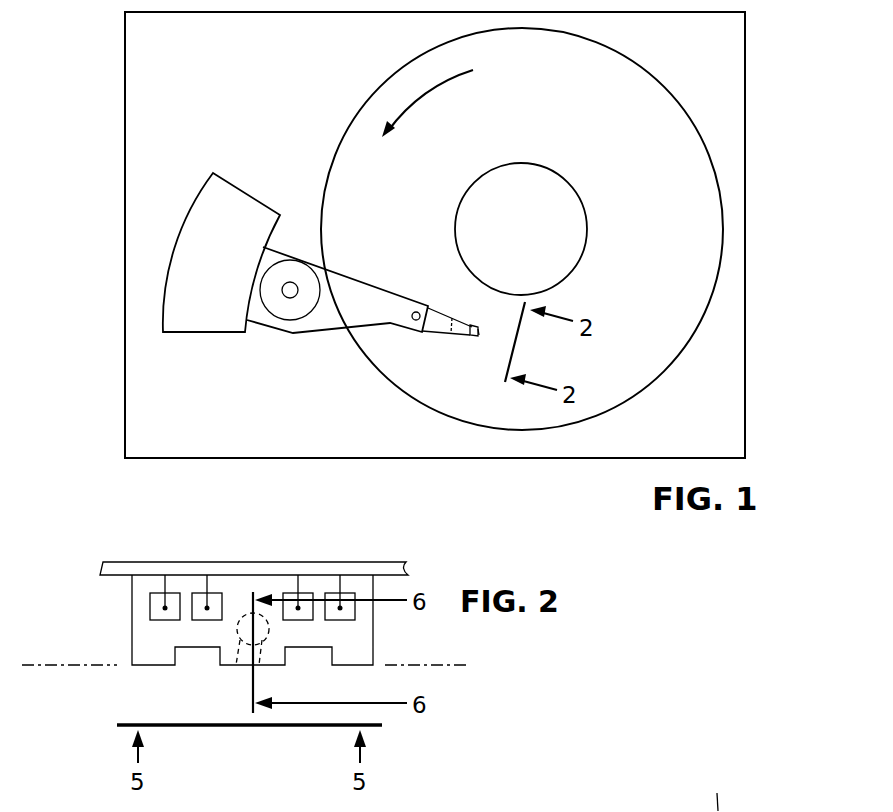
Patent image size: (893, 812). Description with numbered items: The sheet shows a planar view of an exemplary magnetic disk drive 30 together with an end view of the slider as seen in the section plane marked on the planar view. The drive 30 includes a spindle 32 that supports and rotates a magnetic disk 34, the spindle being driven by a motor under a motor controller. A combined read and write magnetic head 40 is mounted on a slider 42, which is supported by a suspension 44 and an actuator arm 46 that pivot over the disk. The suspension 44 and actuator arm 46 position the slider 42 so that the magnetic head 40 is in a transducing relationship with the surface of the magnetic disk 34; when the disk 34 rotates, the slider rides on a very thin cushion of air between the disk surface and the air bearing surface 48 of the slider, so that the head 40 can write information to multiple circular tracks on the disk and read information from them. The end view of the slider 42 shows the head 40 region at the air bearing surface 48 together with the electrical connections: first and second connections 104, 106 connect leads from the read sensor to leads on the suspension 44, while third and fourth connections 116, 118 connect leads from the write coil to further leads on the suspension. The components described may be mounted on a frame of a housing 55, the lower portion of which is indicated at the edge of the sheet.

In FIG. 1, the magnetic disk drive 30 is at (768, 49).
In FIG. 1, the spindle 32 is at (558, 166).
In FIG. 1, the magnetic disk 34 is at (667, 251).
In FIG. 1, the magnetic head 40 is at (482, 336).
In FIG. 2, the magnetic head 40 is at (234, 667).
In FIG. 1, the slider 42 is at (478, 328).
In FIG. 2, the slider 42 is at (132, 606).
In FIG. 1, the suspension 44 is at (437, 334).
In FIG. 1, the actuator arm 46 is at (345, 272).
In FIG. 2, the air bearing surface 48 is at (50, 667).
In FIG. 2, the housing 55 is at (716, 790).
In FIG. 2, the first connection 104 is at (145, 592).
In FIG. 2, the second connection 106 is at (322, 593).
In FIG. 2, the third connection 116 is at (190, 595).
In FIG. 2, the fourth connection 118 is at (284, 593).